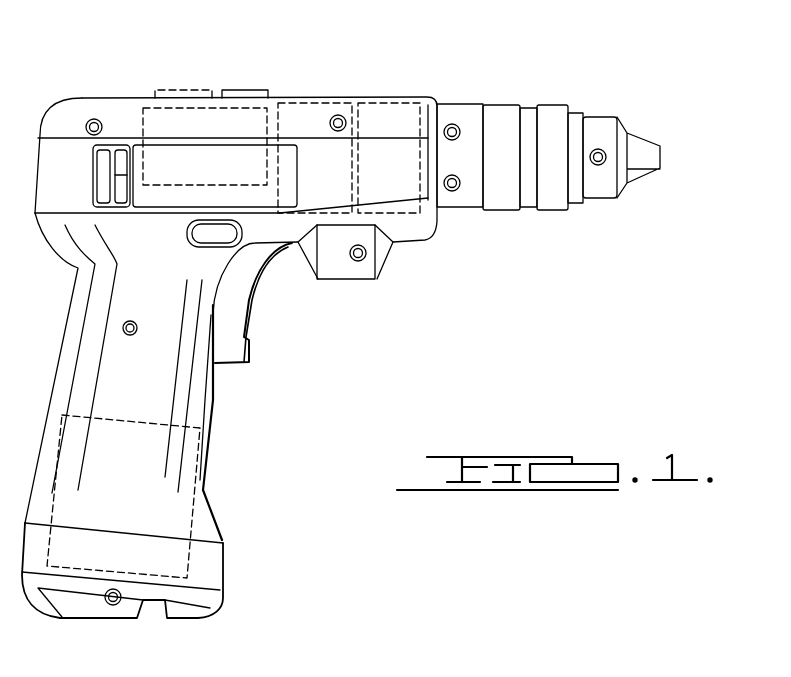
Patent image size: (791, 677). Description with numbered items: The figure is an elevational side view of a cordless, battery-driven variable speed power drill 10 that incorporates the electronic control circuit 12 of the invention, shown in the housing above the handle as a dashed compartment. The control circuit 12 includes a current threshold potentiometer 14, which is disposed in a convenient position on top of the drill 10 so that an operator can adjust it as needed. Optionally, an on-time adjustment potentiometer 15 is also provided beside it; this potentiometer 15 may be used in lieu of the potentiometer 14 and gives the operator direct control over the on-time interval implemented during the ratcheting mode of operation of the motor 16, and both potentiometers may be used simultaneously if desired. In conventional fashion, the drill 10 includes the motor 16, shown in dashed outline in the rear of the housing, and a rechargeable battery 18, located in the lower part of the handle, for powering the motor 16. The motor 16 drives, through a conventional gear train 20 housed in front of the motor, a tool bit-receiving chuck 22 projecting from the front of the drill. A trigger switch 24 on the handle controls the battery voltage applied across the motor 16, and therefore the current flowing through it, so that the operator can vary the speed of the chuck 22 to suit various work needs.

The variable speed power drill 10 is at (510, 268).
The electronic control circuit 12 is at (138, 120).
The current threshold potentiometer 14 is at (250, 89).
The on-time adjustment potentiometer 15 is at (200, 88).
The motor 16 is at (318, 103).
The rechargeable battery 18 is at (200, 530).
The gear train 20 is at (398, 102).
The chuck 22 is at (508, 110).
The trigger switch 24 is at (249, 338).